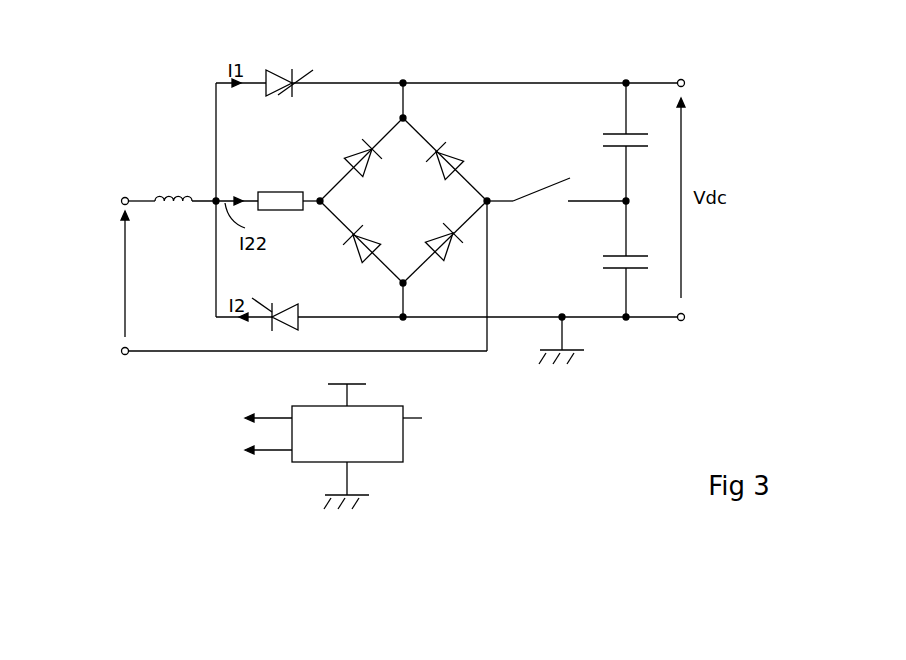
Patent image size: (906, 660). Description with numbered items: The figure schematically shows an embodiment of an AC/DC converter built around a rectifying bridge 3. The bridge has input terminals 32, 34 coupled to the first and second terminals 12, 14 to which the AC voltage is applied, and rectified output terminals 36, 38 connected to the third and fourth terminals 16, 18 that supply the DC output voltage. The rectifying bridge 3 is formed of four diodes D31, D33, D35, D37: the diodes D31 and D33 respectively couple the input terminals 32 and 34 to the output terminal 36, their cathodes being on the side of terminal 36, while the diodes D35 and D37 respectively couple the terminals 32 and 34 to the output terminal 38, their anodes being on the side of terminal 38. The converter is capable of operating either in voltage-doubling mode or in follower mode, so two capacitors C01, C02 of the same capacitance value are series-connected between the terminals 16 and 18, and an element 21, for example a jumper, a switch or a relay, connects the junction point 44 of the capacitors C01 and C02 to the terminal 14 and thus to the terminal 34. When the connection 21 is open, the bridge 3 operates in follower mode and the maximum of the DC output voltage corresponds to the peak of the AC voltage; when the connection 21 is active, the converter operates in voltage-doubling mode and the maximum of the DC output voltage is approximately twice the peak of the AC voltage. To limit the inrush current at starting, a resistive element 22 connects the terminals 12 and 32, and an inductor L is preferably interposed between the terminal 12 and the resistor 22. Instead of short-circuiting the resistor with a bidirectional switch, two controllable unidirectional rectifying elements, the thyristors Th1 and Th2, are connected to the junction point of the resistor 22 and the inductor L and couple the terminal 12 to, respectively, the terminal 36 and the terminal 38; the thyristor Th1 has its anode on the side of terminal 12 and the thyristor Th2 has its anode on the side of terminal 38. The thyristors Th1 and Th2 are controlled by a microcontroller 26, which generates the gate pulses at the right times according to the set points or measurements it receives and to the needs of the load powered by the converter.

The first terminal 12 is at (124, 198).
The second terminal 14 is at (122, 354).
The third terminal 16 is at (685, 83).
The fourth terminal 18 is at (685, 317).
The element 21 is at (540, 190).
The resistive element 22 is at (282, 192).
The microcontroller 26 is at (403, 450).
The rectifying bridge 3 is at (396, 210).
The input terminal 32 is at (320, 200).
The input terminal 34 is at (488, 202).
The rectified output terminal 36 is at (403, 82).
The rectified output terminal 38 is at (403, 317).
The junction point 44 is at (627, 202).
The inductor L is at (173, 187).
The thyristor Th1 is at (289, 71).
The thyristor Th2 is at (276, 306).
The diode D31 is at (352, 155).
The diode D33 is at (459, 156).
The diode D35 is at (350, 249).
The diode D37 is at (446, 256).
The capacitor C01 is at (613, 128).
The capacitor C02 is at (614, 250).